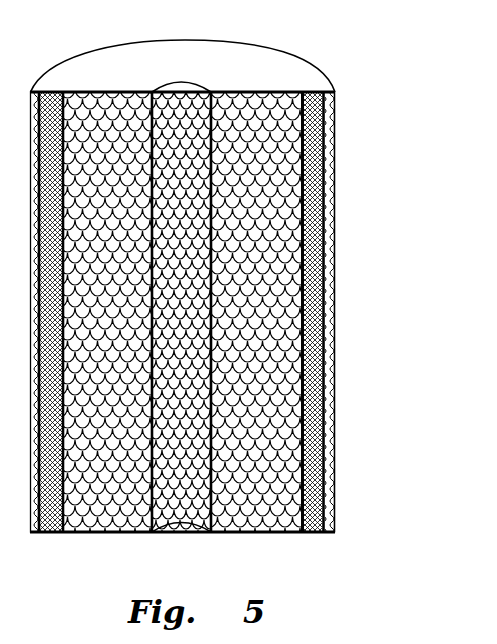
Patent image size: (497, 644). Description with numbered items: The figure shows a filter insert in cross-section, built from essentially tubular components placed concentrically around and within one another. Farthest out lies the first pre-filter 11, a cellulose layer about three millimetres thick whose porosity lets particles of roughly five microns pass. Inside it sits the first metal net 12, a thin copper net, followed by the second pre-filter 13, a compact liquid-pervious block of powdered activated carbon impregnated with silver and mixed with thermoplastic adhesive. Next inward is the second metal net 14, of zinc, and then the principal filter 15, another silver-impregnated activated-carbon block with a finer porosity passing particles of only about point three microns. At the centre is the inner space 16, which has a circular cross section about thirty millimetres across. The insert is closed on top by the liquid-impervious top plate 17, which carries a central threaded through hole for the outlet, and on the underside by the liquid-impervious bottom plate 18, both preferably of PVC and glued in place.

The first pre-filter 11 is at (333, 360).
The first metal net 12 is at (318, 532).
The second pre-filter 13 is at (333, 170).
The second metal net 14 is at (302, 532).
The filter 15 is at (252, 117).
The inner space 16 is at (175, 110).
The top plate 17 is at (118, 58).
The bottom plate 18 is at (175, 532).